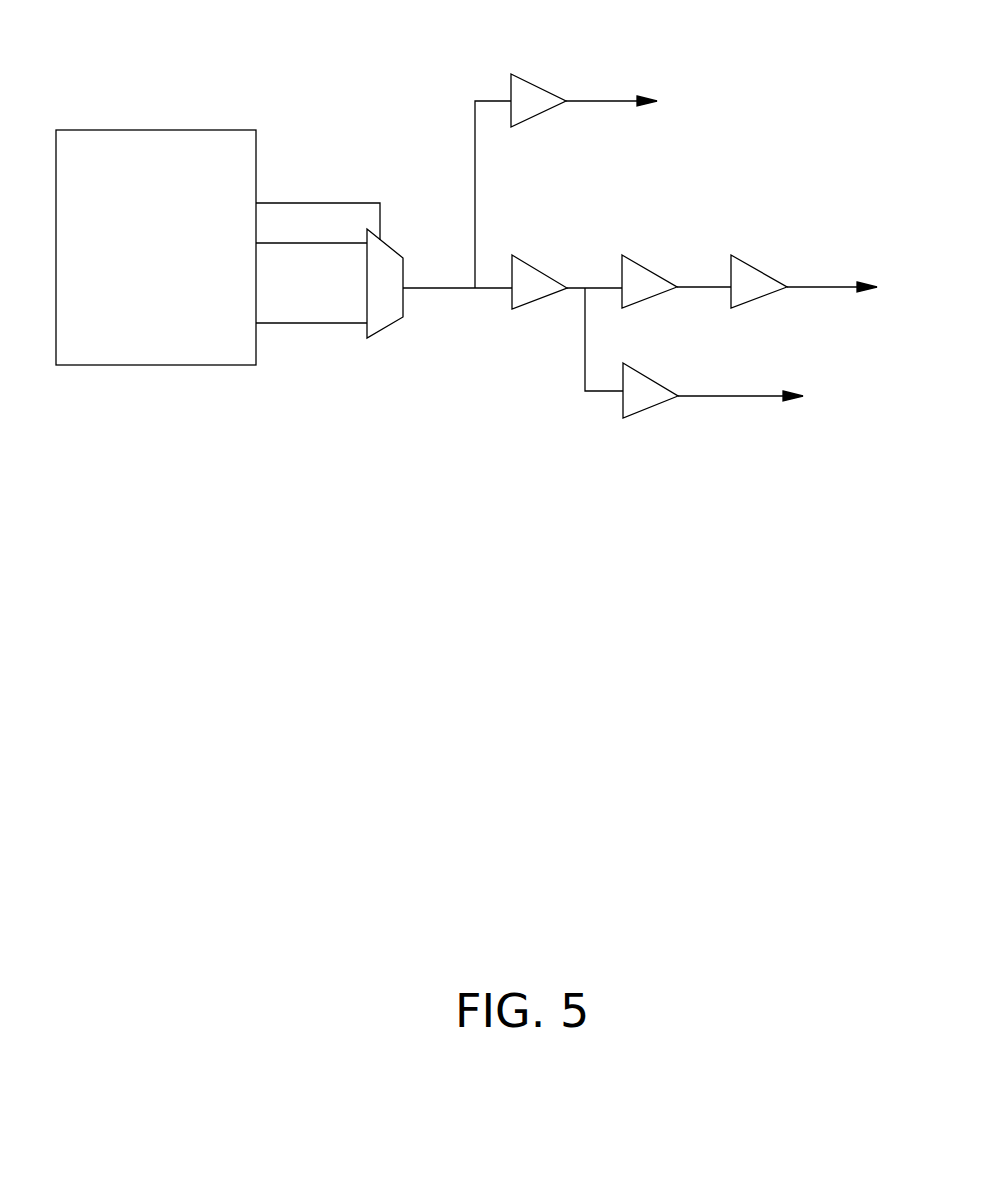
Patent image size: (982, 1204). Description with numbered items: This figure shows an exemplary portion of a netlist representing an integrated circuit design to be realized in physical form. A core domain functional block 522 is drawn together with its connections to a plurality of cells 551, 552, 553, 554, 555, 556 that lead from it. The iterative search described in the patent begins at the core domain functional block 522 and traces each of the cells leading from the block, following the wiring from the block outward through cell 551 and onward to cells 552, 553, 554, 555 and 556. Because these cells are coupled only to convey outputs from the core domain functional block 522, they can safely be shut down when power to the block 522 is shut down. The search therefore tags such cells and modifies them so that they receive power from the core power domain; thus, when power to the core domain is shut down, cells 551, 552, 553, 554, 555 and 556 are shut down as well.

The core domain functional block 522 is at (146, 130).
The cell 551 is at (380, 331).
The cell 552 is at (527, 79).
The cell 553 is at (528, 260).
The cell 554 is at (640, 262).
The cell 555 is at (752, 262).
The cell 556 is at (642, 412).